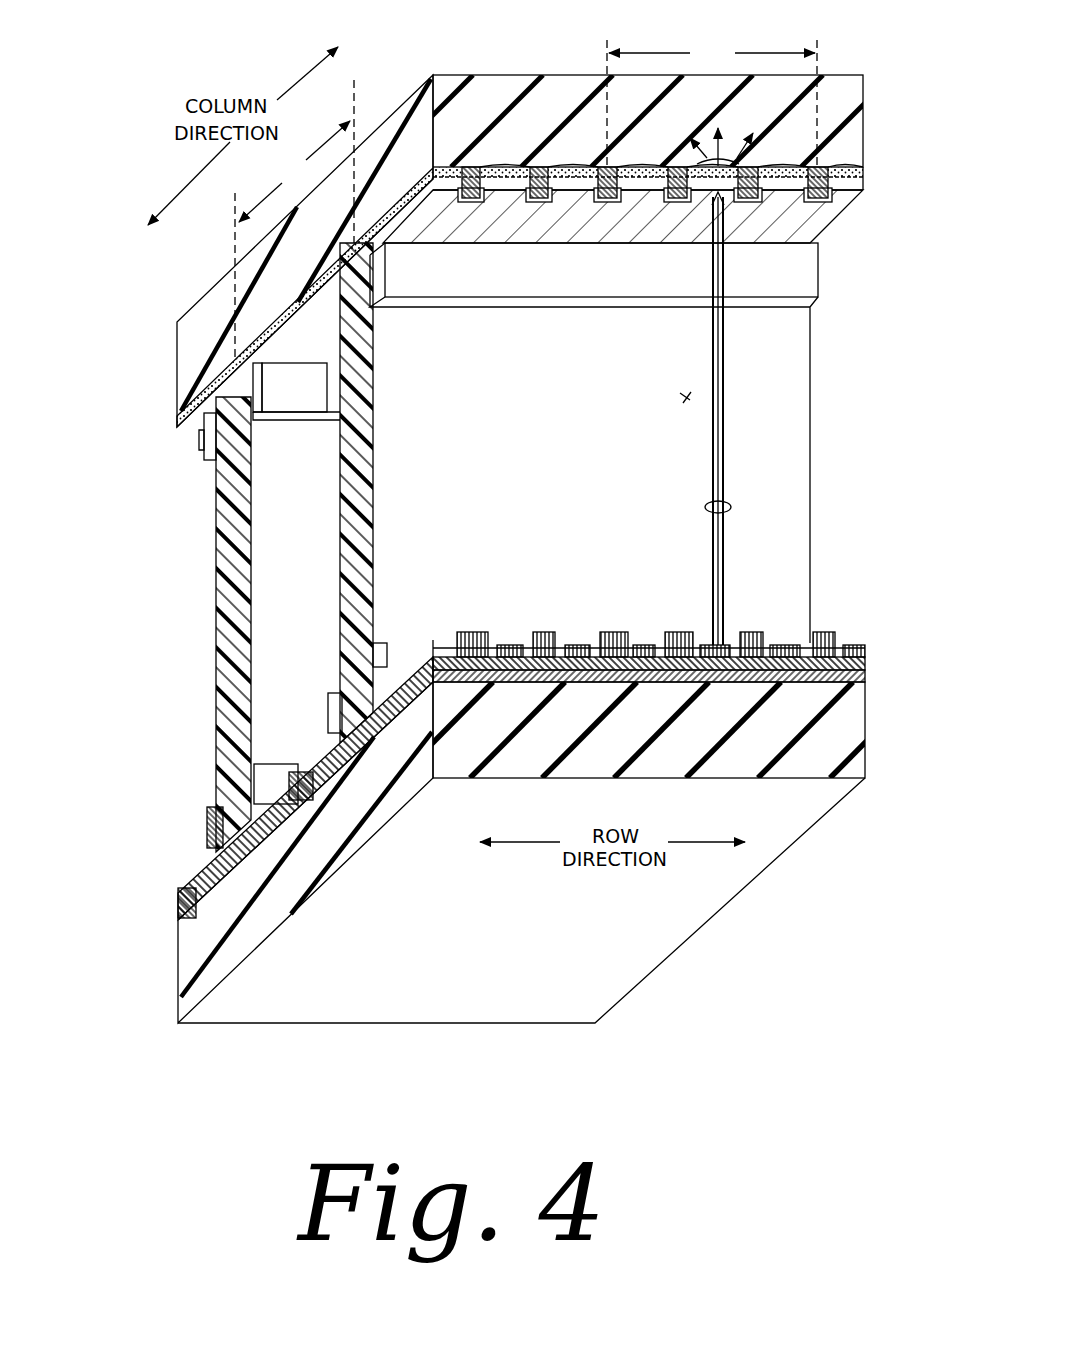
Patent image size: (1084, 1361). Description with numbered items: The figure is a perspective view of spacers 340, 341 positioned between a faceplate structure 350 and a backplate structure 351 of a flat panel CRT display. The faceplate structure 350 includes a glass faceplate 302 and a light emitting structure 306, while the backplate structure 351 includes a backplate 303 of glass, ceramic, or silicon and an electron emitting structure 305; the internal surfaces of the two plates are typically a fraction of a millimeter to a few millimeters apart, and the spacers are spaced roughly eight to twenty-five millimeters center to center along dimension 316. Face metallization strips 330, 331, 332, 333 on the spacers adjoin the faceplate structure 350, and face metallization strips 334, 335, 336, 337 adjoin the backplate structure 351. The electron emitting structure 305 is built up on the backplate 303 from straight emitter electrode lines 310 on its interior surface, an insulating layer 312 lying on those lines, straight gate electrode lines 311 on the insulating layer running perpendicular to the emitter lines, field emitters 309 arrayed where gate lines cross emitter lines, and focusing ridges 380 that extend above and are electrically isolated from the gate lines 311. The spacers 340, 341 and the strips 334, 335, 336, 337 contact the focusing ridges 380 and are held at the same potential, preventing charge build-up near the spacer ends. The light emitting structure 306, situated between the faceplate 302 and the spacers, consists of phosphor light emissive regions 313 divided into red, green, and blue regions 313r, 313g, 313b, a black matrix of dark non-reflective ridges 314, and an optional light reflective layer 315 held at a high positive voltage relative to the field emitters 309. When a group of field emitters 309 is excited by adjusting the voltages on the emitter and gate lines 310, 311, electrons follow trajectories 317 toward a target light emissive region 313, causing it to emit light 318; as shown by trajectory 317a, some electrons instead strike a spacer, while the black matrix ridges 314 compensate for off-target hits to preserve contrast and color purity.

The faceplate 302 is at (507, 75).
The backplate 303 is at (338, 1013).
The electron emitting structure 305 is at (137, 878).
The light emitting structure 306 is at (893, 203).
The field emitters 309 is at (193, 890).
The emitter electrode lines 310 is at (185, 925).
The gate electrode lines 311 is at (203, 873).
The insulating layer 312 is at (215, 805).
The light emissive regions 313 is at (833, 185).
The red light emissive region 313r is at (412, 185).
The green light emissive region 313g is at (502, 165).
The blue light emissive region 313b is at (577, 165).
The black matrix ridges 314 is at (827, 197).
The light reflective layer 315 is at (847, 185).
The dimension 316 is at (526, 198).
The trajectories 317 is at (706, 507).
The trajectory 317a is at (688, 396).
The light 318 is at (695, 158).
The face metallization strip 330 is at (413, 307).
The face metallization strip 331 is at (328, 372).
The face metallization strip 332 is at (268, 422).
The face metallization strip 333 is at (204, 455).
The face metallization strip 334 is at (380, 650).
The face metallization strip 335 is at (333, 693).
The face metallization strip 336 is at (262, 763).
The face metallization strip 337 is at (213, 808).
The spacer 340 is at (377, 486).
The spacer 341 is at (214, 606).
The faceplate structure 350 is at (157, 377).
The backplate structure 351 is at (882, 708).
The focusing ridges 380 is at (530, 630).